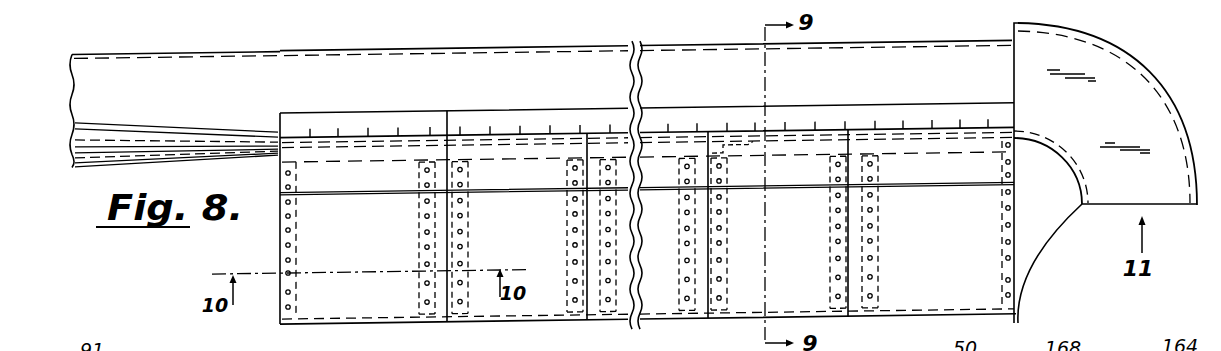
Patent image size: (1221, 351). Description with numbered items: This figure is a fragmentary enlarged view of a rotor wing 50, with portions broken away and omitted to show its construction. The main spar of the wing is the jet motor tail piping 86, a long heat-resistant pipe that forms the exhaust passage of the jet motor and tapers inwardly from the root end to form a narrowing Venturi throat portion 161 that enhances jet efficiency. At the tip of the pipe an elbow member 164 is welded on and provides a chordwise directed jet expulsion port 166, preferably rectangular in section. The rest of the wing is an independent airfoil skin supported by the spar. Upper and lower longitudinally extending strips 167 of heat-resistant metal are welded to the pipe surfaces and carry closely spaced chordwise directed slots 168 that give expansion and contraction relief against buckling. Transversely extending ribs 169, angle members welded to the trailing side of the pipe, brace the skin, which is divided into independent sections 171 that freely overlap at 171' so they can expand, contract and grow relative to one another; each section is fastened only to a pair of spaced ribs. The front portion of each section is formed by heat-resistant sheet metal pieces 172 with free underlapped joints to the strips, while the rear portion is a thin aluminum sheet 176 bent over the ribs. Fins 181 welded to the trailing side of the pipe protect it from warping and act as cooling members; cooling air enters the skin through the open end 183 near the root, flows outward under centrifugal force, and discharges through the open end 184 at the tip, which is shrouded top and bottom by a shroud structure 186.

The rotor wing 50 is at (433, 48).
The jet motor tail piping 86 is at (157, 60).
The Venturi throat portion 161 is at (262, 72).
The elbow member 164 is at (1123, 72).
The jet expulsion port 166 is at (1157, 204).
The longitudinally extending strip 167 is at (385, 118).
The chordwise directed slots 168 is at (340, 134).
The transversely extending ribs 169 is at (422, 220).
The airfoil skin section 171 is at (605, 253).
The free overlap of skin sections 171' is at (657, 252).
The sheet metal piece 172 is at (303, 180).
The aluminum sheet 176 is at (308, 300).
The fins 181 is at (253, 158).
The open end of airfoil skin 183 is at (282, 252).
The open end at wing tip 184 is at (1045, 252).
The shroud structure 186 is at (1062, 212).